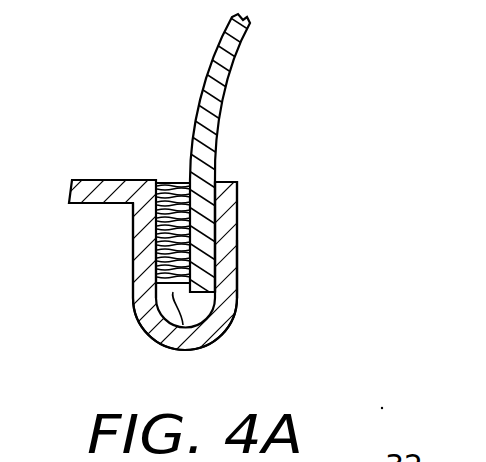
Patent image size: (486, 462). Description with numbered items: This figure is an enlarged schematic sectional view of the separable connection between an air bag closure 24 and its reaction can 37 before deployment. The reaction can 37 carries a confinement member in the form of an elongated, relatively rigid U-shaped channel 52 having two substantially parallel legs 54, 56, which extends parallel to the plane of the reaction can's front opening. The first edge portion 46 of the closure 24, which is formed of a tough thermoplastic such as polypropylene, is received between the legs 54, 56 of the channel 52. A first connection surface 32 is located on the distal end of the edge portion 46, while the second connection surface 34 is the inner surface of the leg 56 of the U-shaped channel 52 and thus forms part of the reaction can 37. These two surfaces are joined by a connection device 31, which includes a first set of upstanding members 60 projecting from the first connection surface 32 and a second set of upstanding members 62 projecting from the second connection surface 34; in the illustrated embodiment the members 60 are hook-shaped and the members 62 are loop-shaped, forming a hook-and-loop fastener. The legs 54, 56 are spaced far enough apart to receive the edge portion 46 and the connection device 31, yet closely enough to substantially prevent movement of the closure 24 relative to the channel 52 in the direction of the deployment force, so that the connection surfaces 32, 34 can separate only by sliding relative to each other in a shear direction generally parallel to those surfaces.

The closure 24 is at (244, 53).
The connection device 31 is at (167, 347).
The first connection surface 32 is at (236, 236).
The second connection surface 34 is at (133, 246).
The reaction can 37 is at (103, 180).
The first edge portion 46 is at (232, 181).
The U-shaped channel 52 is at (221, 345).
The leg 54 is at (223, 267).
The leg 56 is at (138, 282).
The first set of upstanding members 60 is at (188, 182).
The second set of upstanding members 62 is at (160, 181).